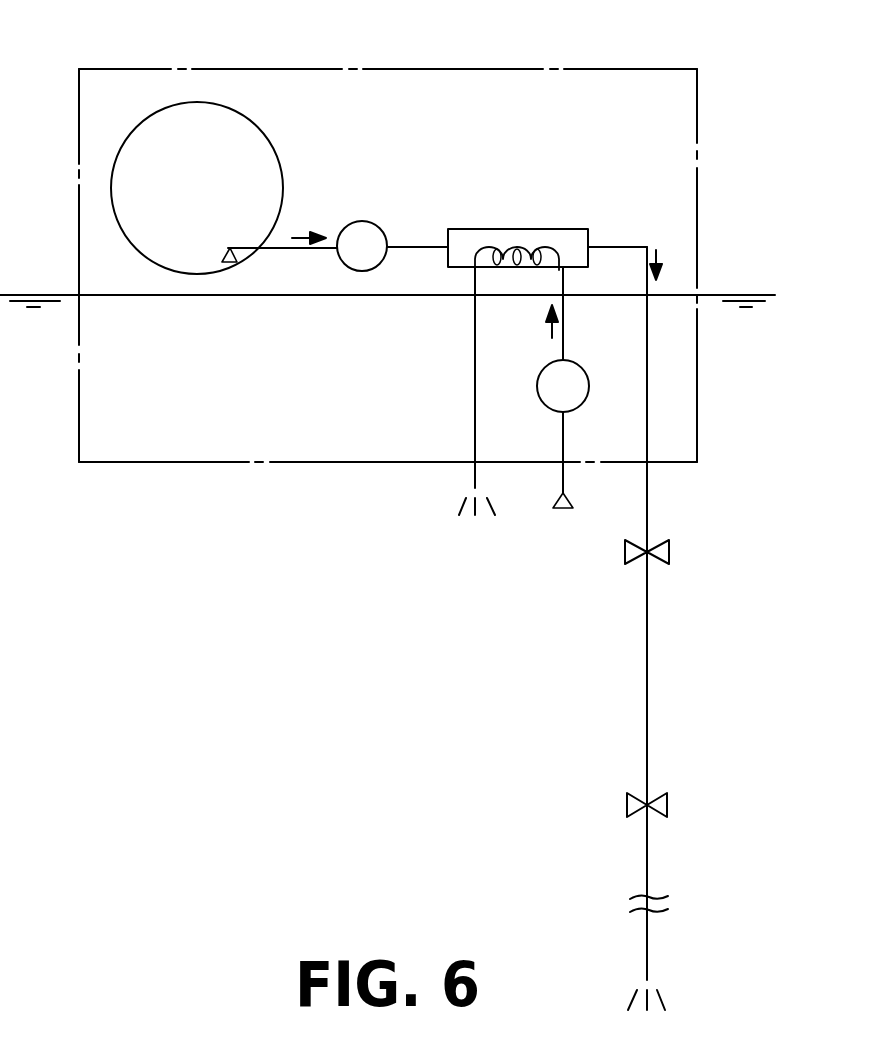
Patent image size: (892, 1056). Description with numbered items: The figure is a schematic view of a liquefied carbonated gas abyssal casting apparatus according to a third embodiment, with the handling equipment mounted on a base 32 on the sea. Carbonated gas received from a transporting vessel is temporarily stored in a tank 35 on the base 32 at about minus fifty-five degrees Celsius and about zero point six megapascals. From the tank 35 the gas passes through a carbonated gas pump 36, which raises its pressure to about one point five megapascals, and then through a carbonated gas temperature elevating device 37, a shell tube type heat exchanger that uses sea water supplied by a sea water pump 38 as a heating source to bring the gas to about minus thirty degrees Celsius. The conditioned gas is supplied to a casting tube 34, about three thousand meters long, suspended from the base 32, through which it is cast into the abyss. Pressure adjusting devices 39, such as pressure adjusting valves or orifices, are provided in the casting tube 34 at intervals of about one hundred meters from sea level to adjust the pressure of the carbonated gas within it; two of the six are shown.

The base on the sea 32 is at (698, 145).
The casting tube 34 is at (648, 668).
The tank 35 is at (253, 121).
The carbonated gas pump 36 is at (371, 222).
The carbonated gas temperature elevating device 37 is at (527, 230).
The sea water pump 38 is at (583, 367).
The pressure adjusting device 39 is at (667, 549).